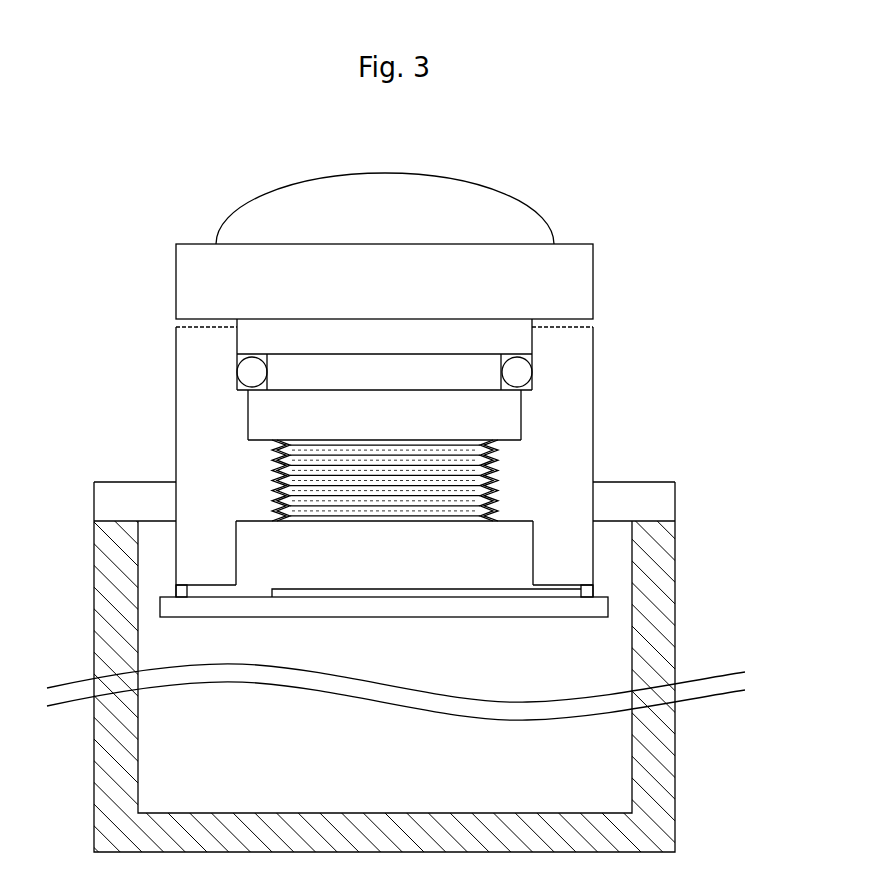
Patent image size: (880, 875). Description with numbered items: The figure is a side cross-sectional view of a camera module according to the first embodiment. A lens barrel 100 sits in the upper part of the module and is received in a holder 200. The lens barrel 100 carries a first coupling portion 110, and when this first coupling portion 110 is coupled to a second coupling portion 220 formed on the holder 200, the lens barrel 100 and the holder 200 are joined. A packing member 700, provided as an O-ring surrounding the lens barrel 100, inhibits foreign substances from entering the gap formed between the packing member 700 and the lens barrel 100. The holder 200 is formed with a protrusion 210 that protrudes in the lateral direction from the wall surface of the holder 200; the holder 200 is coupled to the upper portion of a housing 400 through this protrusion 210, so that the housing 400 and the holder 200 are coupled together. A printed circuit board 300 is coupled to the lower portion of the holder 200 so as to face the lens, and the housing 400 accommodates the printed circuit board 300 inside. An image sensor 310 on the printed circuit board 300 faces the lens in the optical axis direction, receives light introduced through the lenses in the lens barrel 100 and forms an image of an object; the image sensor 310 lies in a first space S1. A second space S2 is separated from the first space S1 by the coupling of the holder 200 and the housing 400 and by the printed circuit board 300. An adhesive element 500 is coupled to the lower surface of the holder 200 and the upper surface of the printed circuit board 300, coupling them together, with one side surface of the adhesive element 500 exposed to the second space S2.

The lens barrel 100 is at (543, 180).
The first coupling portion 110 is at (305, 457).
The holder 200 is at (645, 410).
The protrusion 210 is at (107, 503).
The second coupling portion 220 is at (497, 472).
The printed circuit board 300 is at (585, 613).
The image sensor 310 is at (483, 594).
The housing 400 is at (650, 780).
The adhesive element 500 is at (180, 590).
The packing member 700 is at (246, 373).
The first space S1 is at (283, 546).
The second space S2 is at (220, 648).